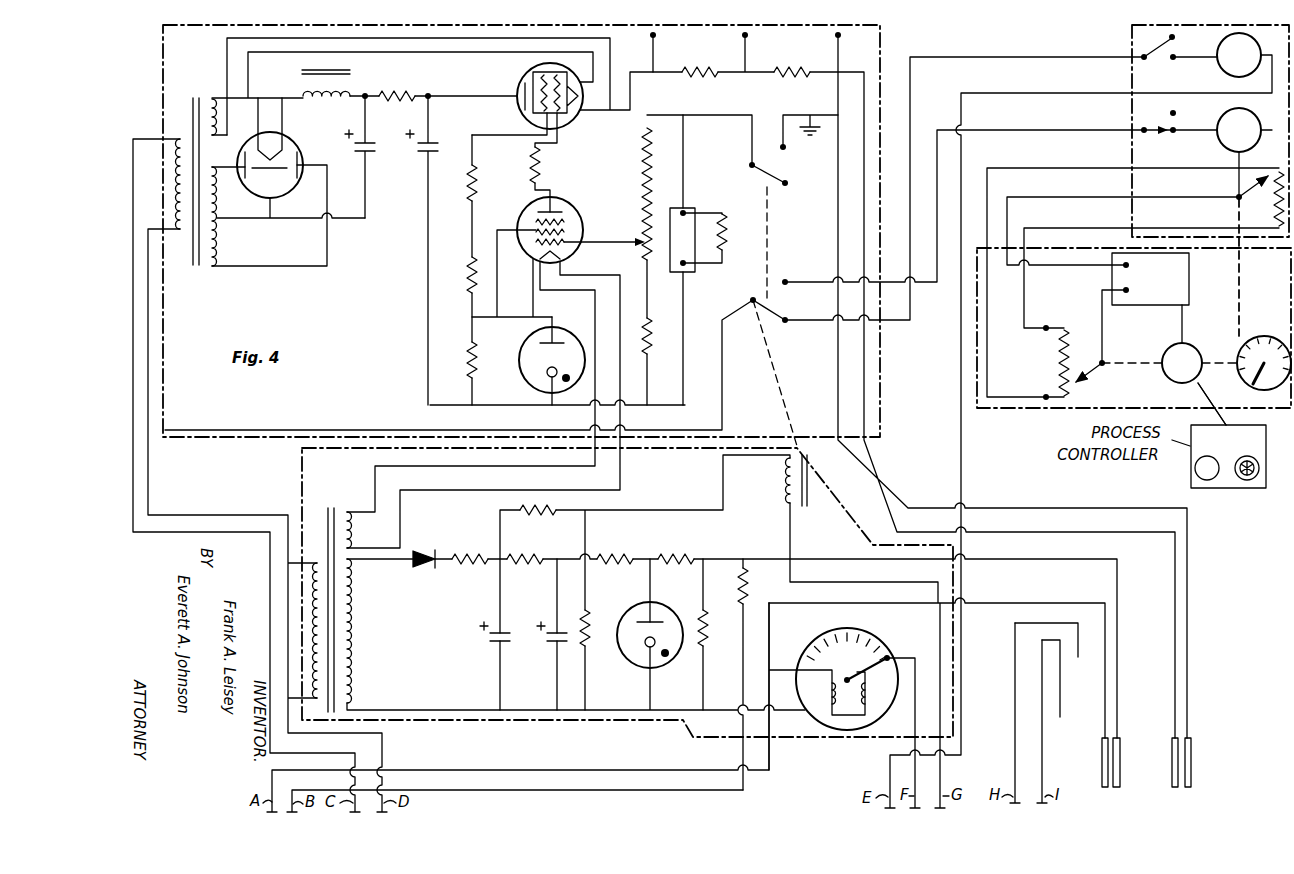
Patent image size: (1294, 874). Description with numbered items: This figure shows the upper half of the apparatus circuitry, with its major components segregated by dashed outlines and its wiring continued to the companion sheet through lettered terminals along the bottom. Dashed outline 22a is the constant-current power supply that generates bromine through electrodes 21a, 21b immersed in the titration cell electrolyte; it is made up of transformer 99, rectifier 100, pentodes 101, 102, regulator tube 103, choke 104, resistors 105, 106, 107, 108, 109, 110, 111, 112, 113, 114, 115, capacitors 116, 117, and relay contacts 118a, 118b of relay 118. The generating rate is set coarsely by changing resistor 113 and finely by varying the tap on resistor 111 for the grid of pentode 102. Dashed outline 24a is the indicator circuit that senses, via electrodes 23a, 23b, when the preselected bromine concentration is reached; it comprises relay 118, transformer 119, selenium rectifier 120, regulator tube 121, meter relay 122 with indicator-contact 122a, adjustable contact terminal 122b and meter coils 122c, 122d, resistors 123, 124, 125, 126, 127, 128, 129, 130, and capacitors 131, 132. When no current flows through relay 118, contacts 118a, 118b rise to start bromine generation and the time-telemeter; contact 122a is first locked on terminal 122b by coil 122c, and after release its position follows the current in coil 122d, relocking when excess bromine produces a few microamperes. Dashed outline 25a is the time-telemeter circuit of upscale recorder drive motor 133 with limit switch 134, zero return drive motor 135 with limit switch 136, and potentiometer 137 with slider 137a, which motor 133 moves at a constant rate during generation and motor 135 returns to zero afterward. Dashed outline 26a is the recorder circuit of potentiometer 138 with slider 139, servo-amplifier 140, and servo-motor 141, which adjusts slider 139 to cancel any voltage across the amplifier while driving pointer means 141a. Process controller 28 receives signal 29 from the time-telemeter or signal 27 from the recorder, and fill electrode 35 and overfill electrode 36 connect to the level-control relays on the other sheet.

The electrode 21a is at (1191, 760).
The electrode 21b is at (1171, 770).
The power supply dashed outline 22a is at (160, 72).
The electrode 23a is at (1121, 742).
The electrode 23b is at (1101, 765).
The indicator circuit dashed outline 24a is at (297, 462).
The time-telemeter circuit dashed outline 25a is at (1127, 38).
The recorder dashed outline 26a is at (972, 362).
The signal 27 is at (1196, 388).
The process controller 28 is at (1236, 449).
The signal 29 is at (1240, 300).
The fill electrode 35 is at (1060, 720).
The overfill electrode 36 is at (1080, 660).
The transformer 99 is at (200, 267).
The rectifier 100 is at (262, 196).
The pentode 101 is at (518, 85).
The pentode 102 is at (570, 214).
The regulator tube 103 is at (562, 332).
The choke 104 is at (300, 86).
The resistor 105 is at (392, 92).
The resistor 106 is at (470, 186).
The resistor 107 is at (532, 165).
The resistor 108 is at (470, 277).
The resistor 109 is at (470, 362).
The resistor 110 is at (642, 152).
The resistor 111 is at (638, 250).
The resistor 112 is at (652, 340).
The resistor 113 is at (727, 238).
The resistor 114 is at (702, 62).
The resistor 115 is at (791, 70).
The capacitor 116 is at (356, 148).
The capacitor 117 is at (432, 140).
The relay 118 is at (800, 506).
The relay contact 118a is at (766, 176).
The relay contact 118b is at (768, 310).
The transformer 119 is at (334, 505).
The selenium rectifier 120 is at (420, 570).
The regulator tube 121 is at (634, 612).
The meter relay 122 is at (812, 640).
The indicator-contact 122a is at (853, 650).
The adjustable contact terminal 122b is at (890, 656).
The meter coil 122c is at (862, 700).
The meter coil 122d is at (830, 700).
The resistor 123 is at (470, 556).
The resistor 124 is at (530, 516).
The resistor 125 is at (532, 556).
The resistor 126 is at (590, 650).
The resistor 127 is at (618, 550).
The resistor 128 is at (678, 556).
The resistor 129 is at (700, 620).
The resistor 130 is at (748, 588).
The capacitor 131 is at (490, 644).
The capacitor 132 is at (550, 648).
The upscale recorder drive motor 133 is at (1220, 118).
The limit switch 134 is at (1152, 136).
The zero return drive motor 135 is at (1219, 68).
The limit switch 136 is at (1153, 59).
The potentiometer 137 is at (1262, 207).
The slider 137a is at (1240, 192).
The potentiometer 138 is at (1060, 360).
The slider 139 is at (1086, 376).
The servo-amplifier 140 is at (1162, 280).
The servo-motor 141 is at (1166, 346).
The pointer means 141a is at (1262, 336).